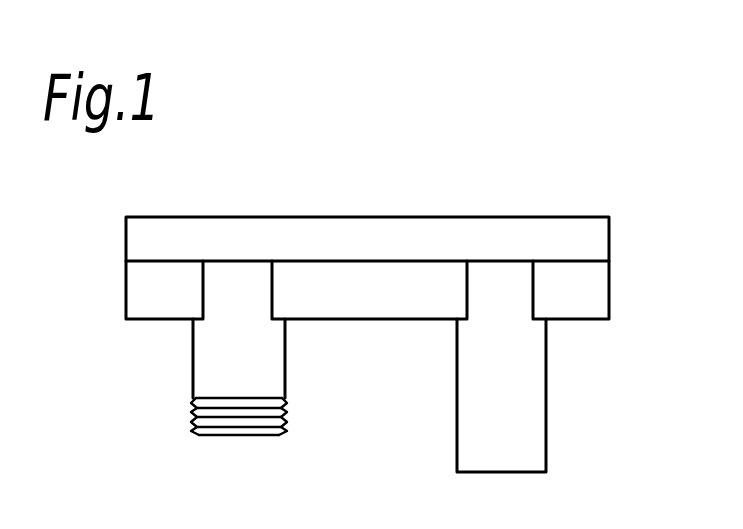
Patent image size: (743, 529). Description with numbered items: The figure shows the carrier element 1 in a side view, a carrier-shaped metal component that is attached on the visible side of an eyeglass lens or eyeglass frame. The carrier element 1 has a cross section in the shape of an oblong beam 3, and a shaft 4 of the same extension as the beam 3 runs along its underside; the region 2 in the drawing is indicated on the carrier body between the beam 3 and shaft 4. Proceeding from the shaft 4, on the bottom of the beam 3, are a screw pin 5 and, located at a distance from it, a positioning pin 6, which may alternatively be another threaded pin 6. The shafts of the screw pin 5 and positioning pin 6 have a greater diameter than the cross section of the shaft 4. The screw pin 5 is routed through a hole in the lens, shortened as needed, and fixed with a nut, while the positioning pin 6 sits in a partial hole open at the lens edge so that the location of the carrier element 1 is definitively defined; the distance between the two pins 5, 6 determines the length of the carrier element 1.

The carrier element 1 is at (342, 202).
The base body 2 is at (478, 247).
The beam 3 is at (600, 242).
The shaft 4 is at (598, 298).
The screw pin 5 is at (273, 367).
The positioning pin 6 is at (520, 388).